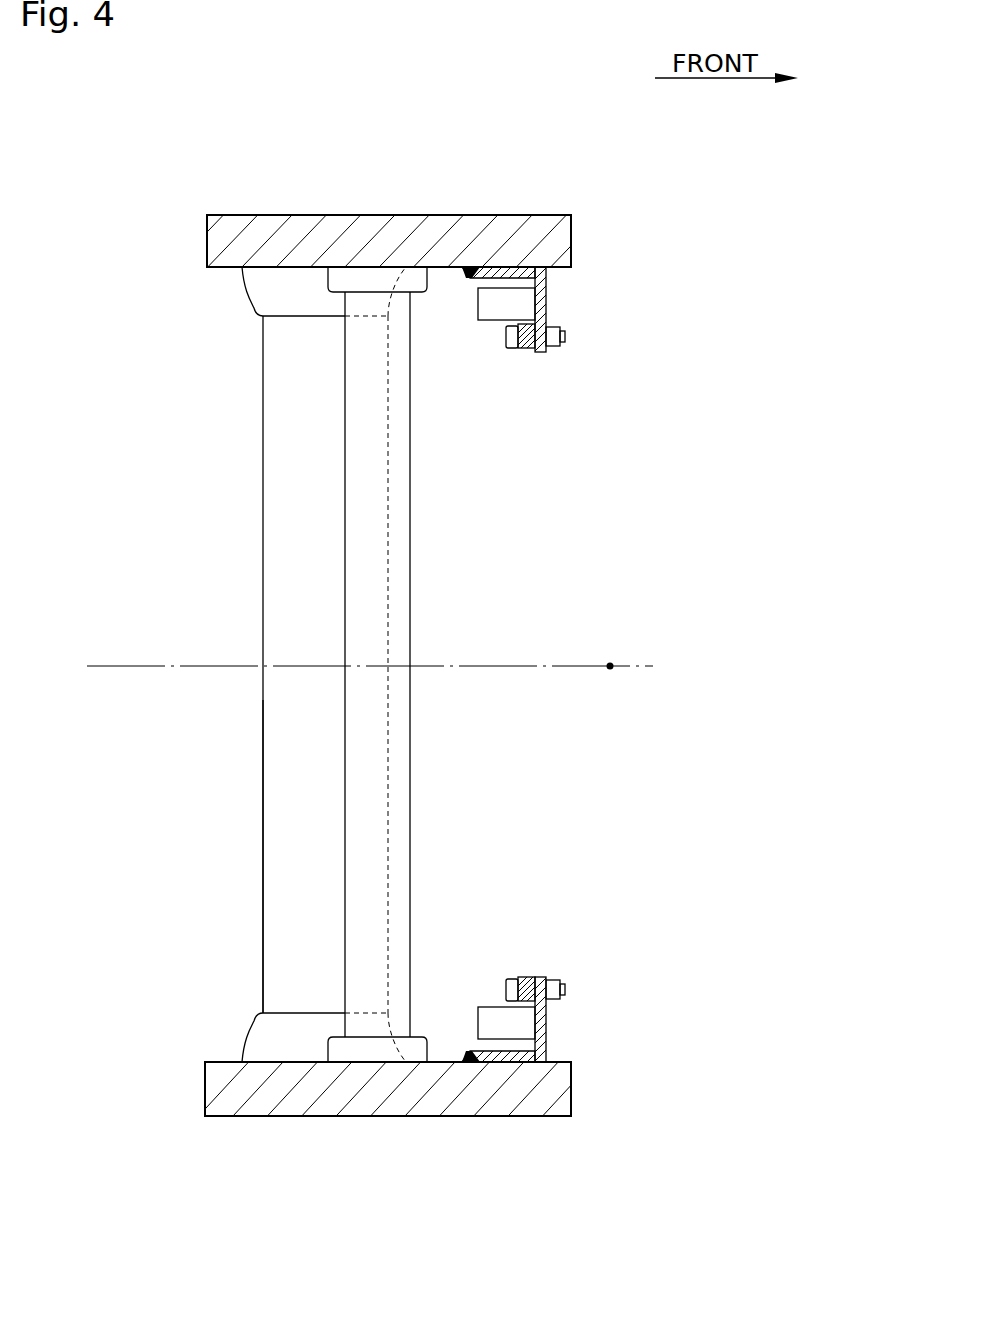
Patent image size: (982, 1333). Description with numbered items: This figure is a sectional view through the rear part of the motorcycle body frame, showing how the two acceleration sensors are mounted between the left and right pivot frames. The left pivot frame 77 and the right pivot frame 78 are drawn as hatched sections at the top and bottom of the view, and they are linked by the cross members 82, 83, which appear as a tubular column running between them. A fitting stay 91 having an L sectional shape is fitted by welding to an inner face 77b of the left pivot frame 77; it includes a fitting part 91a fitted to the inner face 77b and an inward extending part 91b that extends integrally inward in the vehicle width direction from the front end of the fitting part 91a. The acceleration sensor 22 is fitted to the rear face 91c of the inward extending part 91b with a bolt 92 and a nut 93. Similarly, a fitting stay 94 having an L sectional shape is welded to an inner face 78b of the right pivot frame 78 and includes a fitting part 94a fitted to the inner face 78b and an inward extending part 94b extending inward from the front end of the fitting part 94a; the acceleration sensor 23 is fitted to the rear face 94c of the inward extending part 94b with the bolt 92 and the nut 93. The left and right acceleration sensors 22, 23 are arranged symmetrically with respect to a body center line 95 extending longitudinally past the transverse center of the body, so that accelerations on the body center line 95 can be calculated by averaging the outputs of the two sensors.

The acceleration sensor 22 is at (480, 305).
The acceleration sensor 23 is at (480, 1022).
The left pivot frame 77 is at (239, 211).
The inner face 77b is at (562, 268).
The right pivot frame 78 is at (279, 1121).
The inner face 78b is at (562, 1061).
The cross member 82 is at (290, 489).
The cross member 83 is at (290, 863).
The fitting stay 91 is at (560, 299).
The fitting part 91a is at (505, 267).
The inward extending part 91b is at (547, 297).
The rear face 91c is at (511, 289).
The bolt 92 is at (512, 342).
The nut 93 is at (553, 347).
The fitting stay 94 is at (559, 1030).
The fitting part 94a is at (537, 1063).
The inward extending part 94b is at (547, 1028).
The rear face 94c is at (510, 1063).
The body center line 95 is at (610, 663).